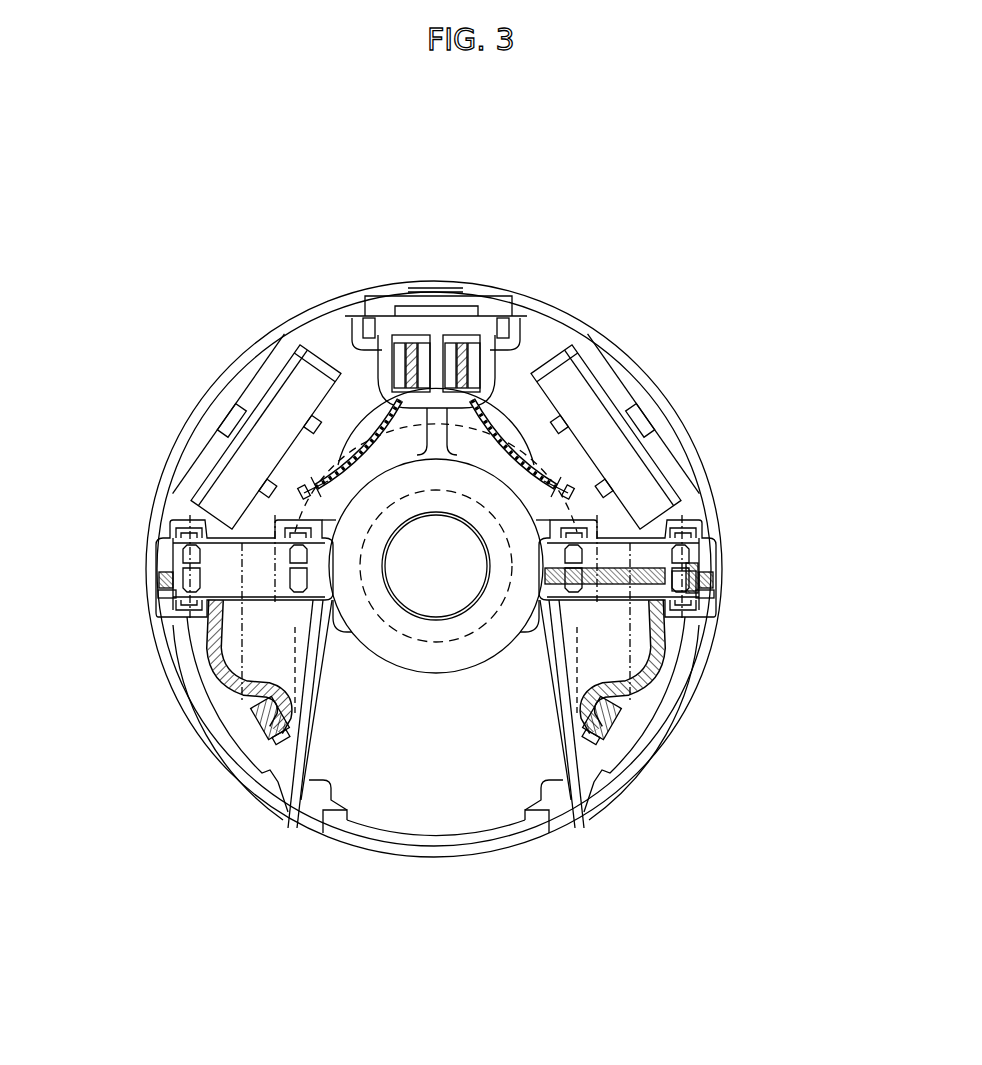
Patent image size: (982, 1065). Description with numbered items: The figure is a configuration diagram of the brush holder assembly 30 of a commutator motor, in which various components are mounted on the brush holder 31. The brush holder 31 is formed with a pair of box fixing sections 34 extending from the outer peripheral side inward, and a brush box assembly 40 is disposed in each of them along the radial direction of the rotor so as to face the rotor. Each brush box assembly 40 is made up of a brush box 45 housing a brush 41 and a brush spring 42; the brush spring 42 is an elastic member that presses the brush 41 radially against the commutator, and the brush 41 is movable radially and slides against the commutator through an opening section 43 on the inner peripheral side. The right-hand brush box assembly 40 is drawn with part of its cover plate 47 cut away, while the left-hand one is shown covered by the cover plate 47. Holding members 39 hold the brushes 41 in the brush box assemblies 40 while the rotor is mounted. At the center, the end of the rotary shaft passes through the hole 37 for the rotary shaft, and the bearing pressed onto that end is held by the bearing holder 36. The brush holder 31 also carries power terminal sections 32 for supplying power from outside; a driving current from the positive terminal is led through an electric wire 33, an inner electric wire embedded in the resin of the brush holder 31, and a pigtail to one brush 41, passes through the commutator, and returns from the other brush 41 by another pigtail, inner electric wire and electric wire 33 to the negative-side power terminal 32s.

The brush holder assembly 30 is at (175, 337).
The brush holder 31 is at (363, 845).
The power terminal section 32 is at (448, 350).
The power terminal 32s is at (402, 350).
The electric wire 33 is at (412, 415).
The box fixing section 34 is at (170, 532).
The bearing holder 36 is at (407, 497).
The hole for rotary shaft 37 is at (427, 573).
The holding member 39 is at (293, 767).
The brush box assembly 40 is at (173, 560).
The brush 41 is at (710, 612).
The brush spring 42 is at (157, 588).
The opening section 43 is at (335, 560).
The brush box 45 is at (712, 557).
The cover plate 47 is at (237, 572).